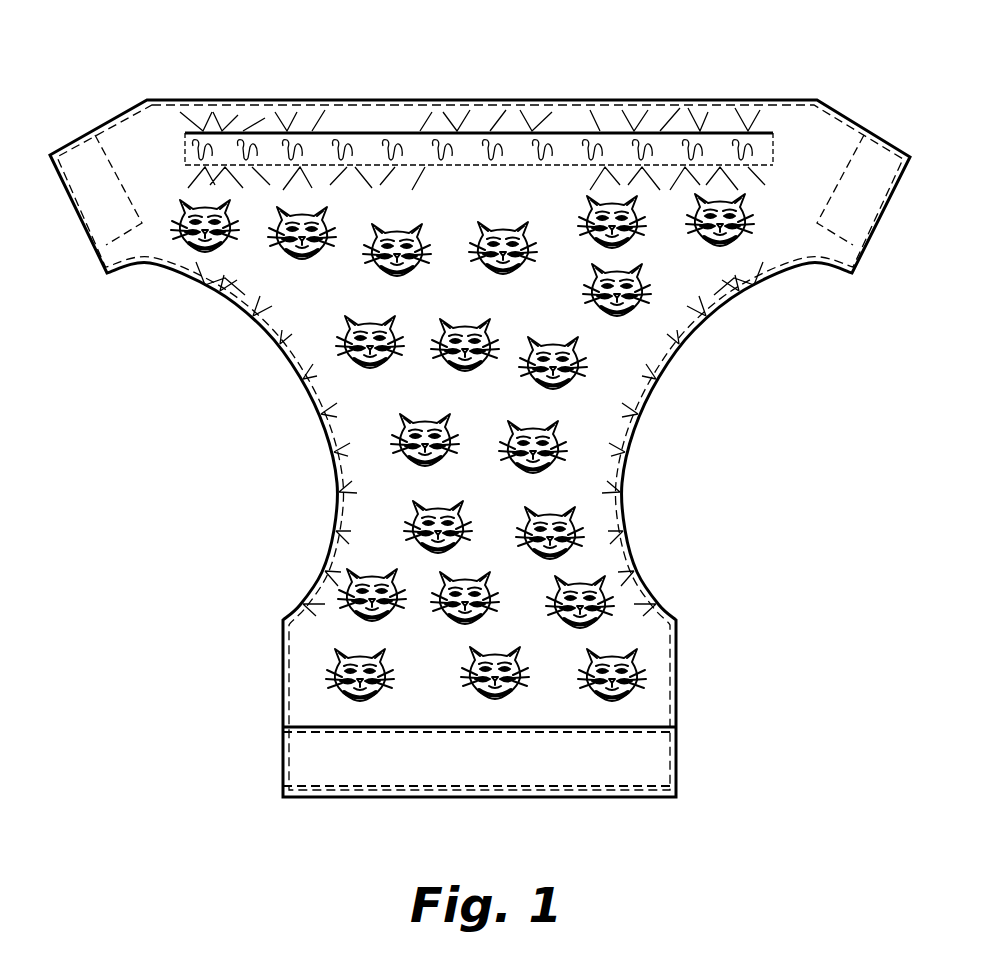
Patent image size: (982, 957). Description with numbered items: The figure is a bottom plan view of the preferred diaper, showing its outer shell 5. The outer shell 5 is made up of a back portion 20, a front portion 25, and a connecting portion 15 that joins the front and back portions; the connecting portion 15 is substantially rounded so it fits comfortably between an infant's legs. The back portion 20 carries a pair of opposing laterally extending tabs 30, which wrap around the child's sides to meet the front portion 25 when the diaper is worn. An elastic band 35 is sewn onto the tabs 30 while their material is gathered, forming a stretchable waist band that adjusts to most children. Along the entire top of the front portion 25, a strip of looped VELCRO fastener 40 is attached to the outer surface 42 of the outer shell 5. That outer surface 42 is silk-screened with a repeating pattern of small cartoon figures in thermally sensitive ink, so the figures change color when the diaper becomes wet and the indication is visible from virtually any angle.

The outer shell 5 is at (645, 397).
The connecting portion 15 is at (580, 483).
The back portion 20 is at (492, 203).
The front portion 25 is at (647, 665).
The tabs 30 is at (828, 127).
The elastic band 35 is at (708, 140).
The looped VELCRO fastener 40 is at (357, 773).
The outer surface 42 is at (363, 385).